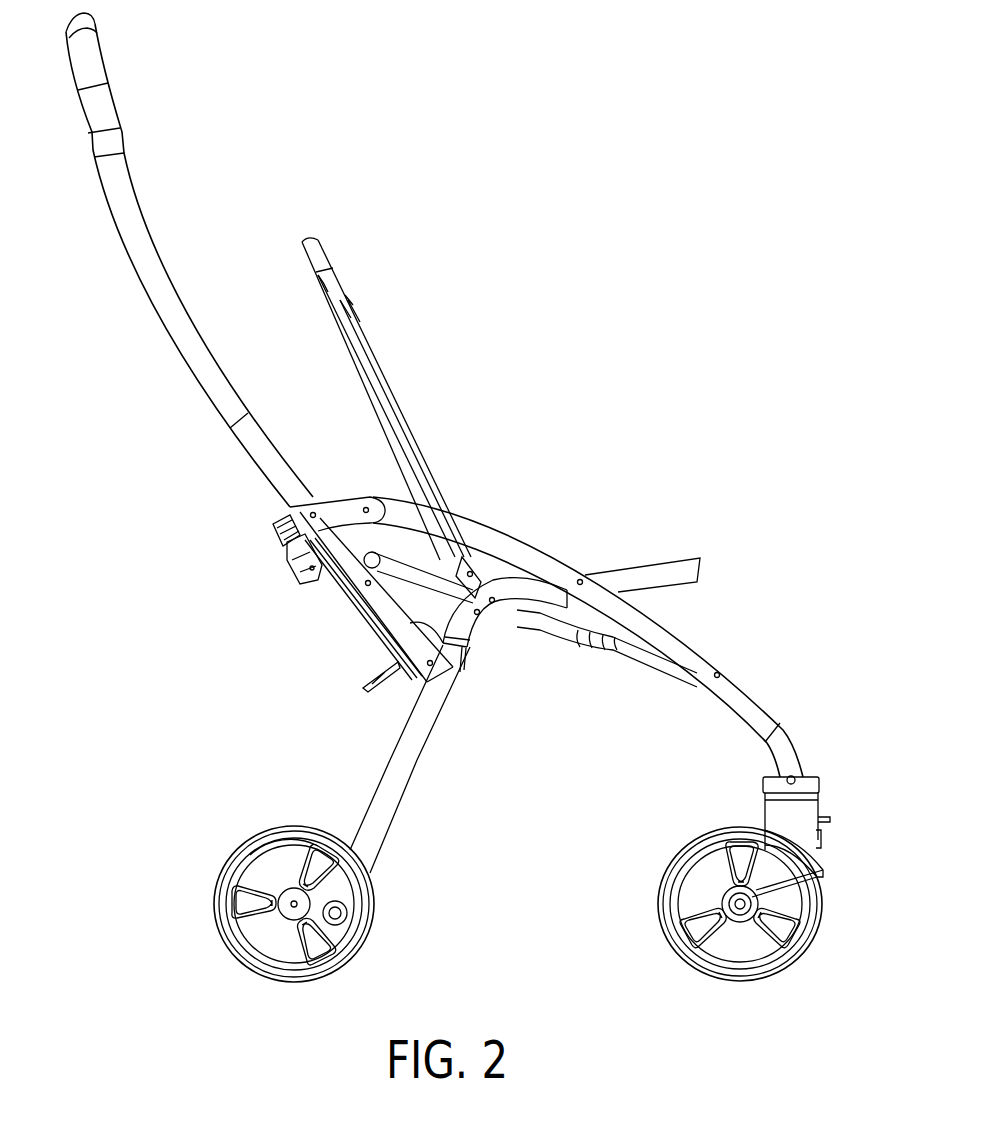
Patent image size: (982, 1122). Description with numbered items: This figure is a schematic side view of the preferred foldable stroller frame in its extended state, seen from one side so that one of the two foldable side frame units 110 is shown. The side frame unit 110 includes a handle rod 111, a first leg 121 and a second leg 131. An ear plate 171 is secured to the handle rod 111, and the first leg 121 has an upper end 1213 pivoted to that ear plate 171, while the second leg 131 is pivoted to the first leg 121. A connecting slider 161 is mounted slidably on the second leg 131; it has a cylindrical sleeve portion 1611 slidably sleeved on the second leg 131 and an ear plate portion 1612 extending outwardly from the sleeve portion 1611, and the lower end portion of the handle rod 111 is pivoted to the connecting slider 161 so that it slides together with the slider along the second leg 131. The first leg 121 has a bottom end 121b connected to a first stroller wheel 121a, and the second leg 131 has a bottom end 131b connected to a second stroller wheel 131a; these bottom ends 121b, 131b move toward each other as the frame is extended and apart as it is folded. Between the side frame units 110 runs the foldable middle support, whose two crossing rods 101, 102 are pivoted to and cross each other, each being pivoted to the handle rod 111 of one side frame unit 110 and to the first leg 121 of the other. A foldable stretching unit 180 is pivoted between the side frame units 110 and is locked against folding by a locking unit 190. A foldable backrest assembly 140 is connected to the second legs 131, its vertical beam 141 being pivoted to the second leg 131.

The crossing rod 101 is at (633, 647).
The crossing rod 102 is at (423, 577).
The side frame unit 110 is at (713, 613).
The handle rod 111 is at (158, 313).
The first leg 121 is at (583, 575).
The first stroller wheel 121a is at (693, 845).
The bottom end 121b is at (792, 757).
The upper end 1213 is at (392, 513).
The second leg 131 is at (390, 777).
The second stroller wheel 131a is at (253, 835).
The bottom end 131b is at (375, 832).
The backrest assembly 140 is at (395, 350).
The vertical beam 141 is at (386, 405).
The connecting slider 161 is at (463, 672).
The sleeve portion 1611 is at (457, 682).
The ear plate portion 1612 is at (400, 615).
The ear plate 171 is at (345, 510).
The stretching unit 180 is at (338, 600).
The locking unit 190 is at (290, 567).